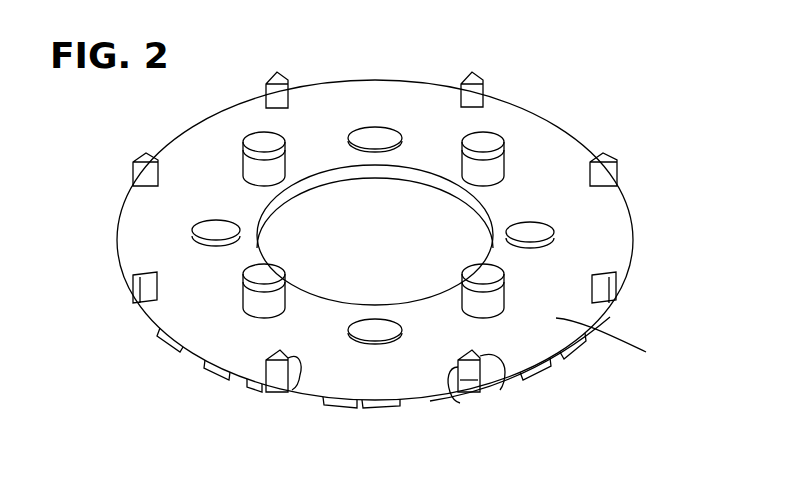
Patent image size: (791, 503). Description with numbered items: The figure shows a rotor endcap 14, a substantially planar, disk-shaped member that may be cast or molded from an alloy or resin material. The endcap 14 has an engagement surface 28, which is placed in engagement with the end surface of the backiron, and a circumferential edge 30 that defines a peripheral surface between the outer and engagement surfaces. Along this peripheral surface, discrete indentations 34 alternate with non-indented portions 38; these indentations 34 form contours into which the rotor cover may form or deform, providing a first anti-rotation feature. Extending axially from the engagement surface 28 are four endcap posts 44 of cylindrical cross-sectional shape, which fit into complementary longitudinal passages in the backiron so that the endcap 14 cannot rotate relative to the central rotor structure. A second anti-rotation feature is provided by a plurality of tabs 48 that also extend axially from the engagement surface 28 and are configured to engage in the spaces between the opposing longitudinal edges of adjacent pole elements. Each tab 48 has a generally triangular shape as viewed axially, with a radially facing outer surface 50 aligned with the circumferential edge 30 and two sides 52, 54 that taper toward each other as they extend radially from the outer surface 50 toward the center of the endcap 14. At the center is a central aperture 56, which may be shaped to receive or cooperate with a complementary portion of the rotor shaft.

The endcap 14 is at (630, 208).
The engagement surface 28 is at (614, 340).
The circumferential edge 30 is at (550, 357).
The discrete indentations 34 is at (250, 380).
The non-indented portions 38 is at (175, 343).
The endcap posts 44 is at (257, 138).
The tabs 48 is at (276, 72).
The radially facing outer surface 50 is at (478, 374).
The side 52 is at (448, 398).
The side 54 is at (513, 358).
The central aperture 56 is at (331, 182).